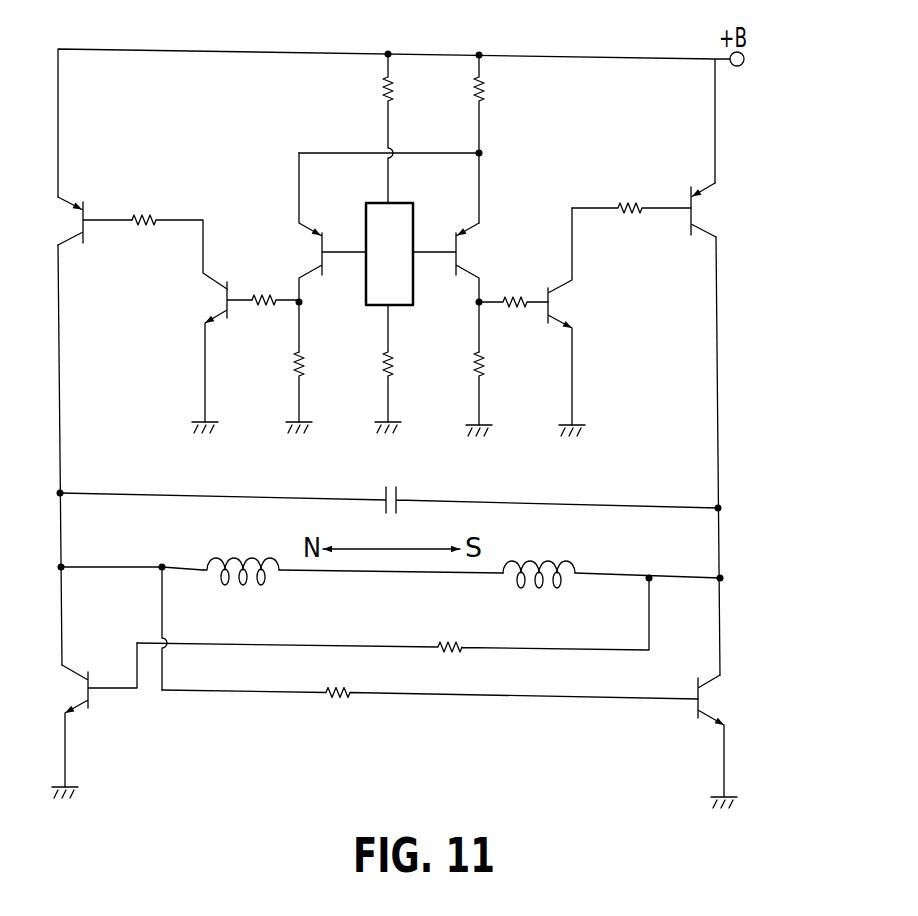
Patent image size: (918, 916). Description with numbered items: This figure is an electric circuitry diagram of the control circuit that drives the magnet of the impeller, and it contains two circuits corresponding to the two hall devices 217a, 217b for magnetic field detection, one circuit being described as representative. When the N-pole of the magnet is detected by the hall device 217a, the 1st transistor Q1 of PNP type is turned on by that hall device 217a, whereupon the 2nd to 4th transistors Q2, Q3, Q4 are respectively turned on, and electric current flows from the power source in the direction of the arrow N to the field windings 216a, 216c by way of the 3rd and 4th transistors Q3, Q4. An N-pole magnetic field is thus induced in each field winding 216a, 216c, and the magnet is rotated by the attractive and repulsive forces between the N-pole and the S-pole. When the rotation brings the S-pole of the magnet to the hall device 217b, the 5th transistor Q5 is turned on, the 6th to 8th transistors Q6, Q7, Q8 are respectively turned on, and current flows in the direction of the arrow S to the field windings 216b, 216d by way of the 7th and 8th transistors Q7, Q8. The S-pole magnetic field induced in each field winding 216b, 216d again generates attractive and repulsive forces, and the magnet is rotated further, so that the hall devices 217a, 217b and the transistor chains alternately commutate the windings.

The hall device for magnetic field detection 217a is at (409, 203).
The hall device for magnetic field detection 217b is at (420, 251).
The field winding 216a is at (242, 557).
The field winding 216b is at (226, 554).
The field winding 216c is at (567, 566).
The field winding 216d is at (572, 561).
The 1st transistor Q1 is at (460, 287).
The 2nd transistor Q2 is at (575, 316).
The 3rd transistor Q3 is at (718, 210).
The 4th transistor Q4 is at (87, 715).
The 5th transistor Q5 is at (332, 252).
The 6th transistor Q6 is at (212, 352).
The 7th transistor Q7 is at (82, 221).
The 8th transistor Q8 is at (725, 736).